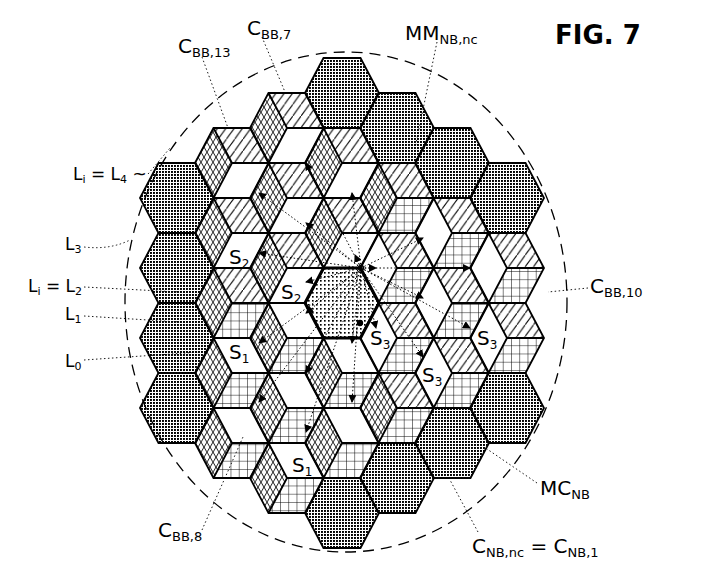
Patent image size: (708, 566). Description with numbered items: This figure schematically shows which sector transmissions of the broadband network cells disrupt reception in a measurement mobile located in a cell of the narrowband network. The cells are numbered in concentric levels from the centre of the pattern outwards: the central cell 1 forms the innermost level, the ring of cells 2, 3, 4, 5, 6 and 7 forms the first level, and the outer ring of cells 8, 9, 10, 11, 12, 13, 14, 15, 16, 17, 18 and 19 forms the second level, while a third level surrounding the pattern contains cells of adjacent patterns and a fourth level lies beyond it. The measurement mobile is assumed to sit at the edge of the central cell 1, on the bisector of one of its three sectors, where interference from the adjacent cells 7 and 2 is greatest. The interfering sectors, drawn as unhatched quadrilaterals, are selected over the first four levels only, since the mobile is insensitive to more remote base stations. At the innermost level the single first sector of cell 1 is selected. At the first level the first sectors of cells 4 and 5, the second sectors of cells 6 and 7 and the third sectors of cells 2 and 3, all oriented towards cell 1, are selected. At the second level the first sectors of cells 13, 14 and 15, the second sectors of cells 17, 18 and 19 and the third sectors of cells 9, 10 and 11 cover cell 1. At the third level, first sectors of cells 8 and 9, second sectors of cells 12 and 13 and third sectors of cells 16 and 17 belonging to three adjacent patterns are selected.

The central cell 1 is at (242, 320).
The level L1 cell 2 is at (397, 268).
The level L1 cell 3 is at (397, 338).
The level L1 cell 4 is at (342, 373).
The level L1 cell 5 is at (287, 338).
The level L1 cell 6 is at (287, 268).
The level L1 cell 7 is at (342, 233).
The level L2 cell 8 is at (314, 320).
The level L2 cell 9 is at (314, 338).
The level L2 cell 10 is at (314, 285).
The level L2 cell 11 is at (314, 233).
The level L2 cell 12 is at (342, 268).
The level L2 cell 13 is at (369, 303).
The level L2 cell 14 is at (369, 285).
The level L2 cell 15 is at (369, 268).
The level L2 cell 16 is at (369, 320).
The level L2 cell 17 is at (369, 373).
The level L2 cell 18 is at (342, 338).
The level L2 cell 19 is at (314, 303).